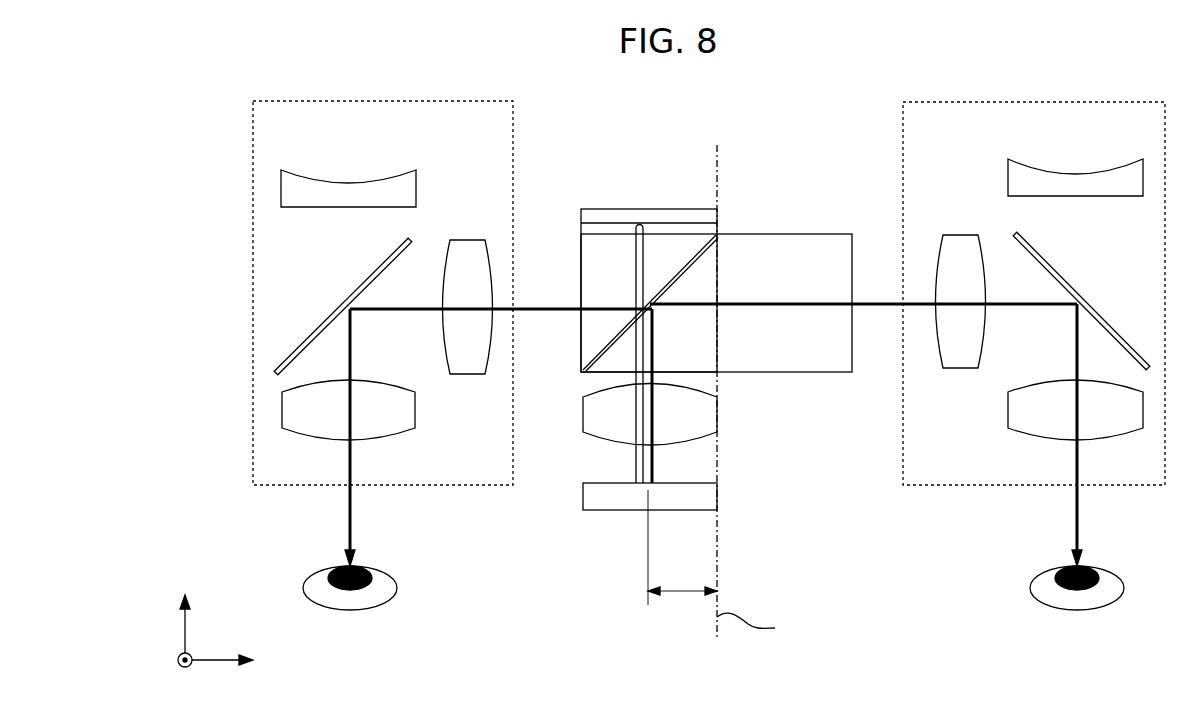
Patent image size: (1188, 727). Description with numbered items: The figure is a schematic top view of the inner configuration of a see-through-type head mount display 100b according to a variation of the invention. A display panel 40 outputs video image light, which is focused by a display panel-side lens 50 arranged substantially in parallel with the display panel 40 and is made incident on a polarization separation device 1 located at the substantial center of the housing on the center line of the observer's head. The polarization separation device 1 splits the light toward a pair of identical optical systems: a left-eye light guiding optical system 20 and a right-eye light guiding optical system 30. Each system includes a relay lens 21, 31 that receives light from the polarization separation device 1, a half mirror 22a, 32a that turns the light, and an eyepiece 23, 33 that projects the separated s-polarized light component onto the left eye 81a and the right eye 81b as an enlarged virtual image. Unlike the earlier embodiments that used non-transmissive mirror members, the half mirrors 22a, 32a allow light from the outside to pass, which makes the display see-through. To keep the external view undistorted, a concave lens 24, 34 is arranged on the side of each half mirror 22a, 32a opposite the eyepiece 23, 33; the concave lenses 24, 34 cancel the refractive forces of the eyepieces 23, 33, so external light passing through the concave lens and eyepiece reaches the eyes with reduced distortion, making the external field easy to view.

The head mount display 100b is at (834, 100).
The polarization separation device 1 is at (787, 230).
The left-eye light guiding optical system 20 is at (333, 101).
The relay lens 21 is at (468, 248).
The half mirror 22a is at (383, 268).
The eyepiece 23 is at (405, 413).
The concave lens 24 is at (328, 185).
The right-eye light guiding optical system 30 is at (950, 102).
The relay lens 31 is at (965, 244).
The half mirror 32a is at (1050, 272).
The eyepiece 33 is at (1025, 430).
The concave lens 34 is at (1055, 176).
The display panel 40 is at (705, 497).
The display panel-side lens 50 is at (705, 418).
The left eye 81a is at (396, 585).
The right eye 81b is at (1045, 608).